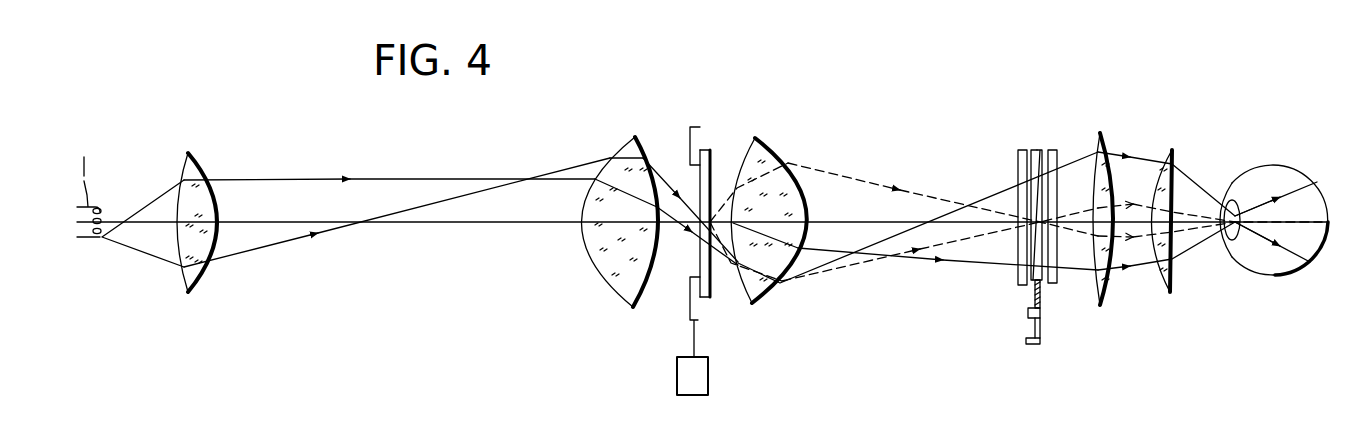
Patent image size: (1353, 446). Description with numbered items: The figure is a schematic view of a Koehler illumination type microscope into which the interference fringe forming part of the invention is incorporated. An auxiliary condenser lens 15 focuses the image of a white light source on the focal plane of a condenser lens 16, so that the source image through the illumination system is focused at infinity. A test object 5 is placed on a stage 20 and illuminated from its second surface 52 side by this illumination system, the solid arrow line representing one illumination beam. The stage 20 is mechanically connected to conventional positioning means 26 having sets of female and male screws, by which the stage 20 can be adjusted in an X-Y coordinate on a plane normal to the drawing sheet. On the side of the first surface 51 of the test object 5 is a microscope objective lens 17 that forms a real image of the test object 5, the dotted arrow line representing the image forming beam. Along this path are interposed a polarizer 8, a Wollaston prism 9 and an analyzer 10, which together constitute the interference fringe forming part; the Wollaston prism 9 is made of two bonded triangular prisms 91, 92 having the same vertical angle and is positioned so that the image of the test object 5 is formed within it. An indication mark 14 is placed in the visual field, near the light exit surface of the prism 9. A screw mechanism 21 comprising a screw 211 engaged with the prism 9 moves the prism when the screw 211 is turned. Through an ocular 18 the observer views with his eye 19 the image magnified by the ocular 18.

The auxiliary condenser lens 15 is at (197, 159).
The condenser lens 16 is at (628, 147).
The test object 5 is at (695, 225).
The first surface 51 is at (713, 260).
The plate surface 52 is at (696, 254).
The stage 20 is at (690, 318).
The positioning means 26 is at (704, 371).
The microscope objective lens 17 is at (768, 150).
The polarizer 8 is at (1022, 148).
The Wollaston prism 9 is at (1054, 170).
The triangular prism 91 is at (1034, 215).
The triangular prism 92 is at (1037, 215).
The indication mark 14 is at (1046, 224).
The analyzer 10 is at (1055, 148).
The screw 211 is at (1033, 300).
The screw mechanism 21 is at (1040, 314).
The ocular 18 is at (1182, 122).
The eye 19 is at (1280, 160).